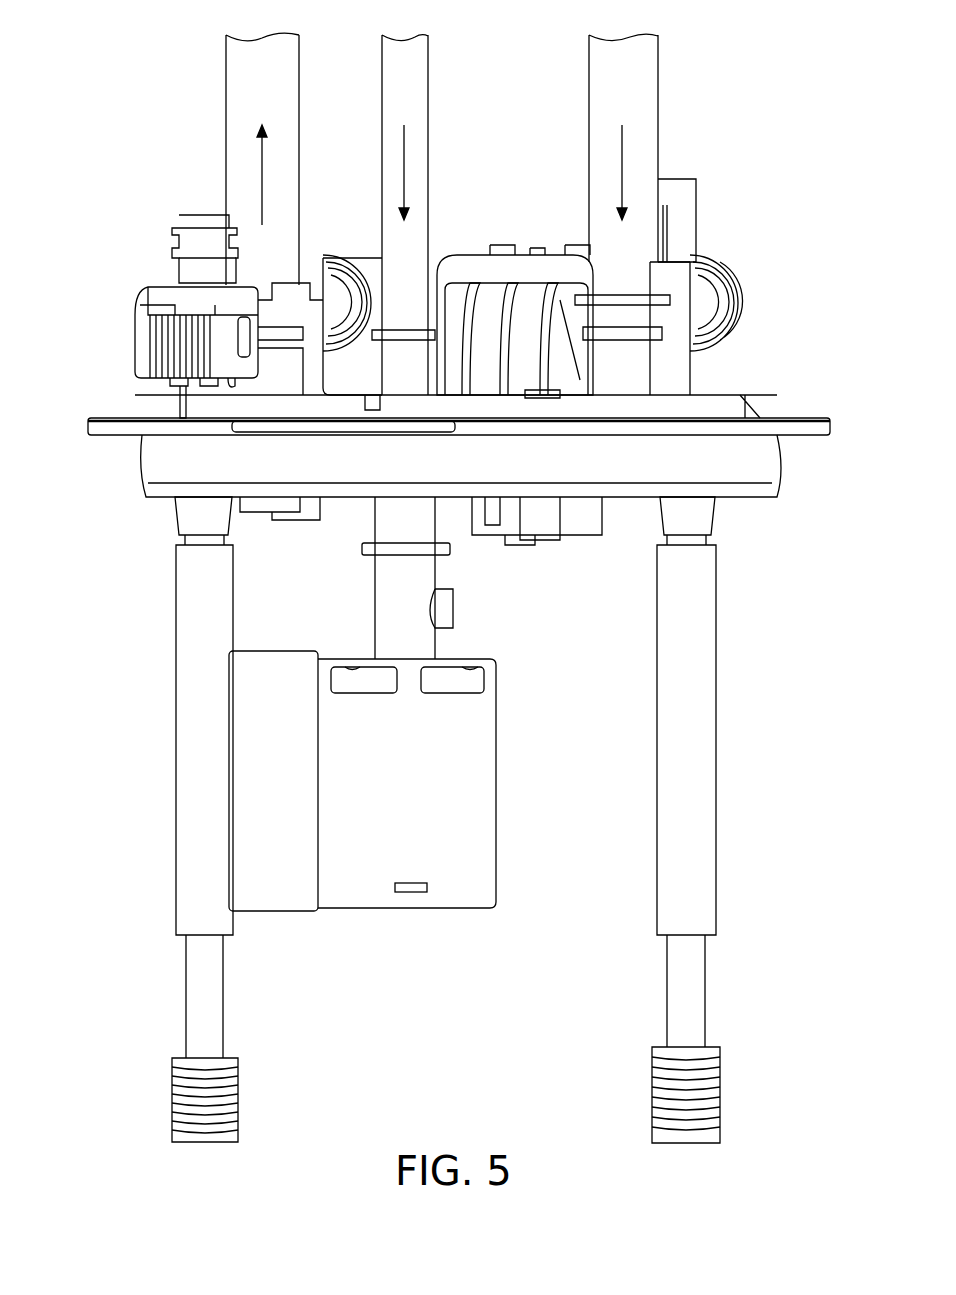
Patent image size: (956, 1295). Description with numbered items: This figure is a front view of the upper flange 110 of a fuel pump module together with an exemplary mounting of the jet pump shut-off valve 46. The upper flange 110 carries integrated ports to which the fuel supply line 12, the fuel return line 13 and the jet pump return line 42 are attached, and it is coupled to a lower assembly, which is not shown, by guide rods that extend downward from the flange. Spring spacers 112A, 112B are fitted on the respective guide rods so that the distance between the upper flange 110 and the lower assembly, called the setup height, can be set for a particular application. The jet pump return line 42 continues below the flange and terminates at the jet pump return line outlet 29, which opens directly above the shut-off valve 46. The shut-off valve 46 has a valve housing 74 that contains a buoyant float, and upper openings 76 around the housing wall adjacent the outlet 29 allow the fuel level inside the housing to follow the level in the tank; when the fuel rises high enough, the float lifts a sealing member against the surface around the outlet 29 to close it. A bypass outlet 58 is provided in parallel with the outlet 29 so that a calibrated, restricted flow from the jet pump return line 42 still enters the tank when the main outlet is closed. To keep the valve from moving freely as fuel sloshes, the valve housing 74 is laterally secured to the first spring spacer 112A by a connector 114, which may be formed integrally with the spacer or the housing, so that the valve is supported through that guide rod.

The fuel supply line 12 is at (236, 117).
The jet pump return line 42 is at (417, 117).
The fuel return line 13 is at (647, 117).
The upper flange 110 is at (63, 353).
The jet pump return line outlet 29 is at (386, 591).
The bypass outlet 58 is at (444, 608).
The upper openings 76 is at (348, 670).
The valve housing 74 is at (478, 783).
The shut-off valve 46 is at (480, 970).
The connector 114 is at (272, 898).
The spring spacer 112A is at (187, 826).
The spring spacer 112B is at (697, 734).